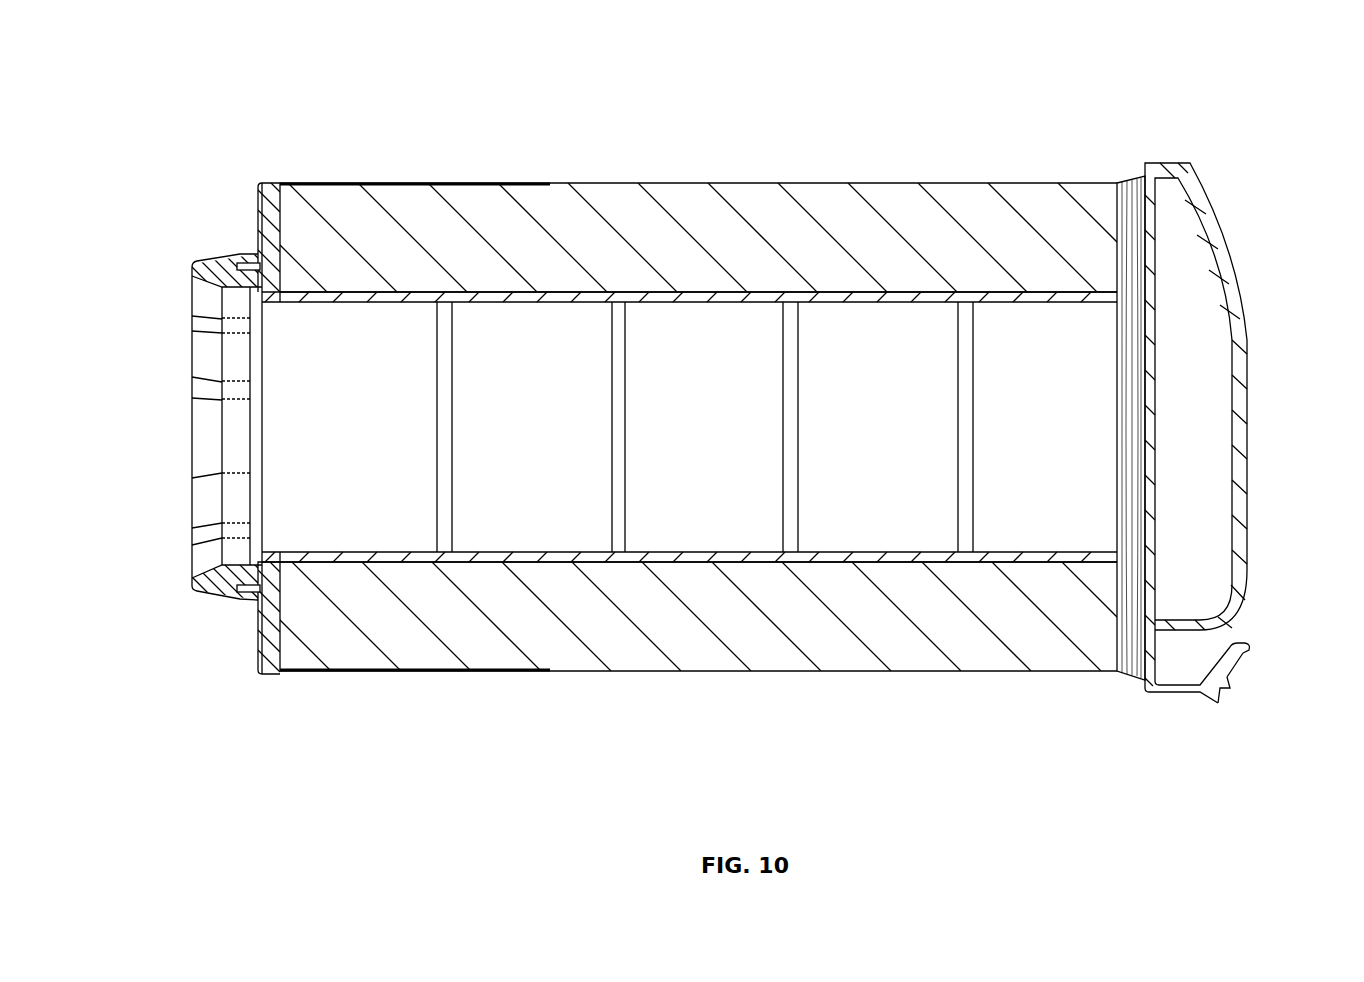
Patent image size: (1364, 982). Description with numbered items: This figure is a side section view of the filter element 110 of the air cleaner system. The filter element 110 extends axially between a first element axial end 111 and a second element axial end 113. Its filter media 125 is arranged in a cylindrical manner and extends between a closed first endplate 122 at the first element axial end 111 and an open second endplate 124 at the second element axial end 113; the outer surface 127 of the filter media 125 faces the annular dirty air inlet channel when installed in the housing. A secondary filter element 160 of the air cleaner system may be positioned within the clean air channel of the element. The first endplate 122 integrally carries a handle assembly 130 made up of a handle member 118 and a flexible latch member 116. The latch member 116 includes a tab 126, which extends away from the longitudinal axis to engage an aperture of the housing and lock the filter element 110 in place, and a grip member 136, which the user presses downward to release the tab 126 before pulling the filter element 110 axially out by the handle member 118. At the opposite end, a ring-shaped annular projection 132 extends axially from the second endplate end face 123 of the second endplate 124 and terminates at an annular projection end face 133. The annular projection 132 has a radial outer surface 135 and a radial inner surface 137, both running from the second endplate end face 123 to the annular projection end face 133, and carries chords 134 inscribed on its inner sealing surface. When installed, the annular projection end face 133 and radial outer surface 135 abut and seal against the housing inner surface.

The filter element 110 is at (1107, 108).
The first element axial end 111 is at (1280, 575).
The second element axial end 113 is at (245, 646).
The latch member 116 is at (1218, 683).
The handle member 118 is at (1240, 455).
The first endplate 122 is at (1152, 297).
The second endplate end face 123 is at (257, 207).
The second endplate 124 is at (273, 208).
The filter media 125 is at (620, 207).
The tab 126 is at (1220, 705).
The outer surface 127 is at (760, 183).
The handle assembly 130 is at (1273, 292).
The annular projection 132 is at (205, 589).
The annular projection end face 133 is at (189, 258).
The chords 134 is at (216, 281).
The radial outer surface 135 is at (223, 250).
The grip member 136 is at (1243, 647).
The radial inner surface 137 is at (192, 541).
The secondary filter element 160 is at (1038, 557).